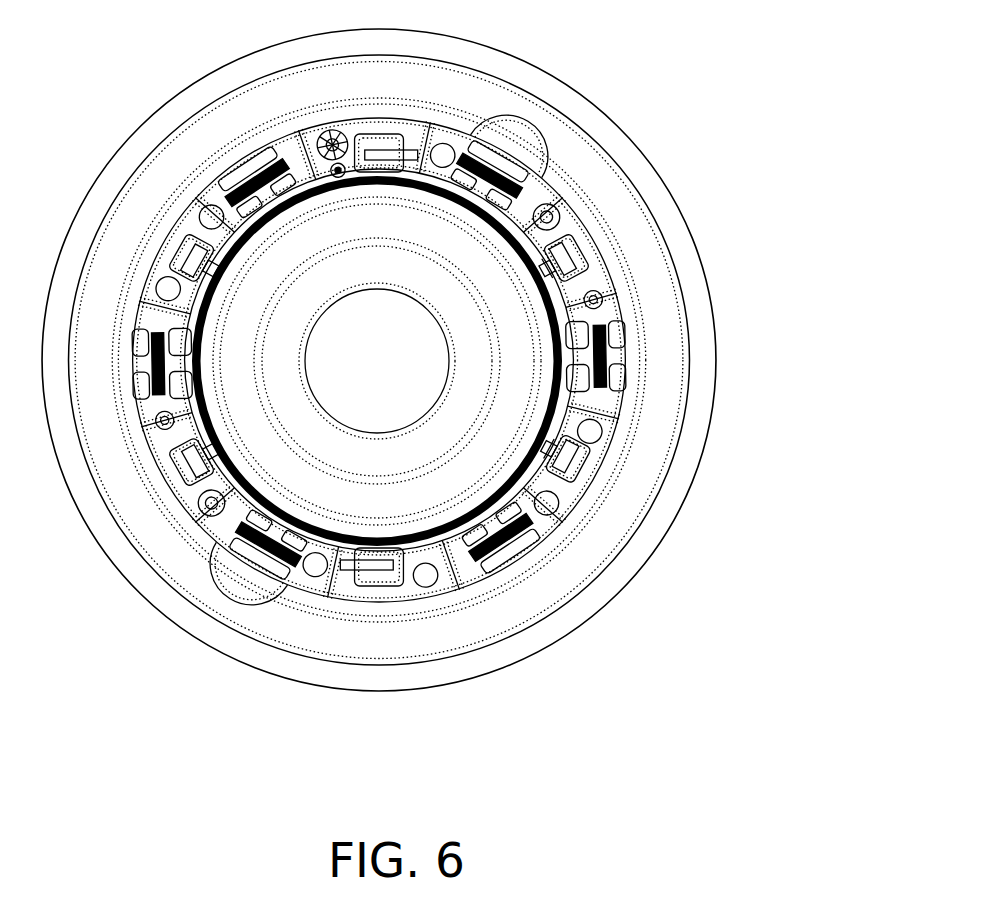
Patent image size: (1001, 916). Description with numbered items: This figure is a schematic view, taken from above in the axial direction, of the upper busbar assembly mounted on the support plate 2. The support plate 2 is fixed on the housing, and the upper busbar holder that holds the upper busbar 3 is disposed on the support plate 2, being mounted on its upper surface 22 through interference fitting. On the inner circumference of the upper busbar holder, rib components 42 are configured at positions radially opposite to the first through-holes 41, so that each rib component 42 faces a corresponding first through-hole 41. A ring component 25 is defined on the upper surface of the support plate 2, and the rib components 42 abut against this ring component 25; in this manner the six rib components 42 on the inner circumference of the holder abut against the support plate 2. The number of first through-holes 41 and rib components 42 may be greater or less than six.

The support plate 2 is at (571, 571).
The upper busbar 3 is at (500, 555).
The upper surface 22 is at (541, 431).
The ring component 25 is at (540, 460).
The first through-hole 41 is at (545, 262).
The rib component 42 is at (558, 250).